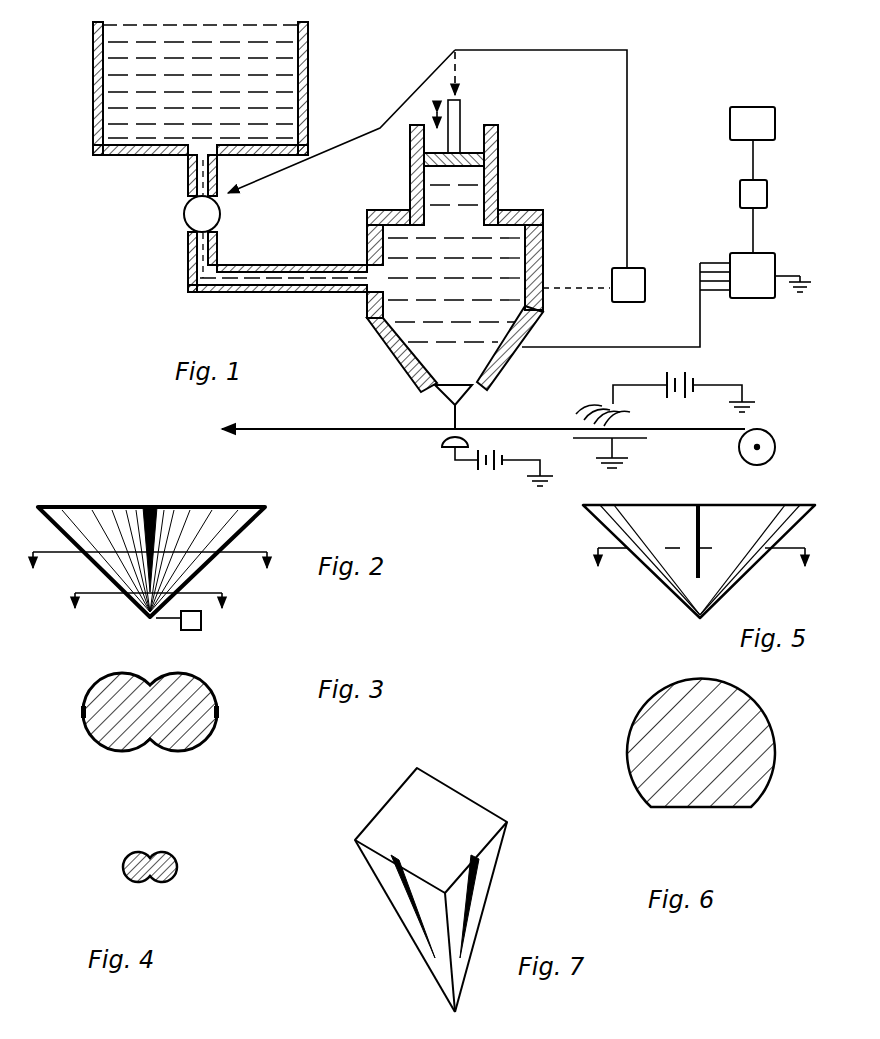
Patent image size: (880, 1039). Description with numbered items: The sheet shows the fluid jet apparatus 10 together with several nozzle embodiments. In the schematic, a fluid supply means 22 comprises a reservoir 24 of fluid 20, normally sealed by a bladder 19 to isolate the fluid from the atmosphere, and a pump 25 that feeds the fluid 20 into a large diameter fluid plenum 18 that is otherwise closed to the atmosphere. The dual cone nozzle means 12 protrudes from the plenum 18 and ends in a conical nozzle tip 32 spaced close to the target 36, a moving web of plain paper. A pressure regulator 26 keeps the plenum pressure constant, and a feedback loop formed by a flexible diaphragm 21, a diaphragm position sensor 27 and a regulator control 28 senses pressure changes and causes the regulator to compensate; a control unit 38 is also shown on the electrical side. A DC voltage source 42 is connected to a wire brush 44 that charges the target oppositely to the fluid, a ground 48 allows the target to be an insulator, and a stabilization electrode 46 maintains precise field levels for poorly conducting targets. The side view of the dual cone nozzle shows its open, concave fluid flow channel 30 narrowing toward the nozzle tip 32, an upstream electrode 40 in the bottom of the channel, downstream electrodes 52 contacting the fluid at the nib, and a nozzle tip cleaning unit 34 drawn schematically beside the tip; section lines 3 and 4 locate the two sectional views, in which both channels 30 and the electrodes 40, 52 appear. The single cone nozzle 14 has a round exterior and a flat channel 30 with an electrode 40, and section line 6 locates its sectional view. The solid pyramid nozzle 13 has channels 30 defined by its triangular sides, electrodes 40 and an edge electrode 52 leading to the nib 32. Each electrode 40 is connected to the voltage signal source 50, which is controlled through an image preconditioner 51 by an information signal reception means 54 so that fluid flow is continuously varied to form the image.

In FIG. 1, the fluid jet apparatus 10 is at (188, 300).
In FIG. 1, the dual cone nozzle means 12 is at (435, 398).
In FIG. 2, the dual cone nozzle means 12 is at (97, 525).
In FIG. 3, the dual cone nozzle means 12 is at (85, 722).
In FIG. 4, the dual cone nozzle means 12 is at (132, 876).
In FIG. 7, the solid pyramid nozzle 13 is at (383, 808).
In FIG. 5, the single cone nozzle 14 is at (665, 513).
In FIG. 6, the single cone nozzle 14 is at (662, 718).
In FIG. 1, the fluid plenum 18 is at (370, 332).
In FIG. 1, the bladder 19 is at (285, 22).
In FIG. 1, the fluid 20 is at (155, 107).
In FIG. 1, the flexible diaphragm 21 is at (546, 298).
In FIG. 1, the fluid supply means 22 is at (90, 80).
In FIG. 1, the reservoir 24 is at (95, 86).
In FIG. 1, the pump 25 is at (184, 222).
In FIG. 1, the pressure regulator 26 is at (470, 128).
In FIG. 1, the diaphragm position sensor 27 is at (575, 287).
In FIG. 1, the regulator control 28 is at (635, 302).
In FIG. 2, the fluid flow channel 30 is at (155, 505).
In FIG. 3, the fluid flow channel 30 is at (133, 655).
In FIG. 4, the fluid flow channel 30 is at (152, 855).
In FIG. 5, the fluid flow channel 30 is at (700, 504).
In FIG. 6, the fluid flow channel 30 is at (697, 824).
In FIG. 7, the fluid flow channel 30 is at (378, 868).
In FIG. 2, the nozzle tip 32 is at (148, 619).
In FIG. 5, the nozzle tip 32 is at (698, 620).
In FIG. 7, the nozzle tip 32 is at (458, 1010).
In FIG. 2, the nozzle tip cleaning unit 34 is at (182, 633).
In FIG. 1, the target 36 is at (378, 432).
In FIG. 1, the control unit 38 is at (765, 312).
In FIG. 2, the electrode 40 is at (146, 506).
In FIG. 3, the electrode 40 is at (153, 685).
In FIG. 5, the electrode 40 is at (702, 546).
In FIG. 6, the electrode 40 is at (702, 808).
In FIG. 7, the electrode 40 is at (383, 805).
In FIG. 1, the DC voltage source 42 is at (700, 378).
In FIG. 1, the wire brush 44 is at (584, 398).
In FIG. 1, the stabilization electrode 46 is at (440, 448).
In FIG. 1, the ground 48 is at (633, 449).
In FIG. 1, the voltage signal source 50 is at (775, 265).
In FIG. 1, the image preconditioner 51 is at (770, 195).
In FIG. 2, the downstream electrode 52 is at (38, 506).
In FIG. 3, the downstream electrode 52 is at (82, 712).
In FIG. 4, the downstream electrode 52 is at (124, 866).
In FIG. 7, the downstream electrode 52 is at (432, 830).
In FIG. 1, the information signal reception means 54 is at (775, 122).
In FIG. 2, the section line 3— 3 is at (150, 574).
In FIG. 2, the section line 4— 4 is at (149, 613).
In FIG. 5, the section line 6— 6 is at (702, 573).